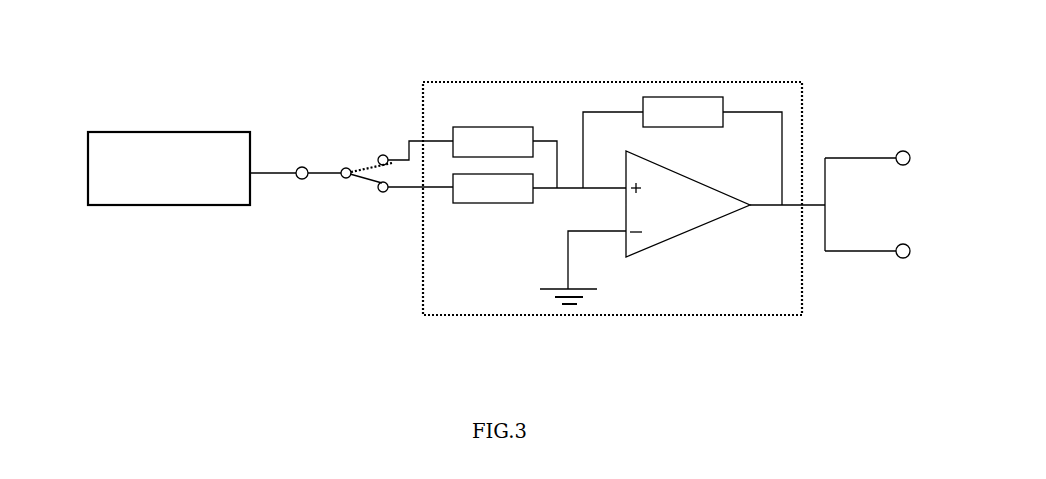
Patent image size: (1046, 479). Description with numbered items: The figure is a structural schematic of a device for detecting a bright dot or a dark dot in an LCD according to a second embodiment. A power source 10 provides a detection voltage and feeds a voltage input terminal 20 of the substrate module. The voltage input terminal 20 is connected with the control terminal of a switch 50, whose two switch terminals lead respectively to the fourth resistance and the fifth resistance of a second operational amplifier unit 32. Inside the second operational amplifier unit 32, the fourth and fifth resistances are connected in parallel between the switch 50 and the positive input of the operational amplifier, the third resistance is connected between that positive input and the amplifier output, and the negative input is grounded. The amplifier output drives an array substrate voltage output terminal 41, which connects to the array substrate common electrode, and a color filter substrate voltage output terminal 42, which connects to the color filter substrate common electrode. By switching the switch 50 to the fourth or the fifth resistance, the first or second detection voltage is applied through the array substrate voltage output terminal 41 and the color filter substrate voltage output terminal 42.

The power source 10 is at (169, 129).
The voltage input terminal 20 is at (256, 129).
The switch 50 is at (333, 197).
The second operational amplifier unit 32 is at (571, 198).
The array substrate voltage output terminal 41 is at (852, 293).
The color filter substrate voltage output terminal 42 is at (852, 100).